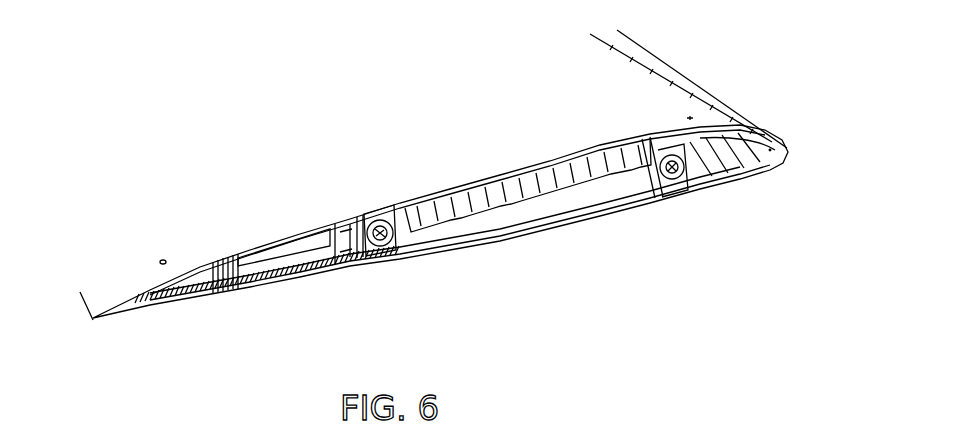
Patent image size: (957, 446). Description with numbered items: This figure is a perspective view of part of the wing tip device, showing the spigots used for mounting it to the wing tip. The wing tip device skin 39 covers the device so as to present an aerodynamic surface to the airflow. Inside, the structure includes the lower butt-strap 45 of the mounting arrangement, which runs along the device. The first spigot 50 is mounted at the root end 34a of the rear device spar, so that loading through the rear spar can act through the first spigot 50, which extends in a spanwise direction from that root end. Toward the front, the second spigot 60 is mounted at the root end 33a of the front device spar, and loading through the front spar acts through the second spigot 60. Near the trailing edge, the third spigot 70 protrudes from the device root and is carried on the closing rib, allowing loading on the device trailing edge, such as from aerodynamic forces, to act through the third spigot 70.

The wing tip device skin 39 is at (244, 257).
The third spigot 70 is at (223, 288).
The root end of the rear device spar 34a is at (374, 216).
The first spigot 50 is at (381, 248).
The second, lower, butt-strap 45 is at (533, 172).
The root end of the front device spar 33a is at (670, 147).
The second spigot 60 is at (675, 181).